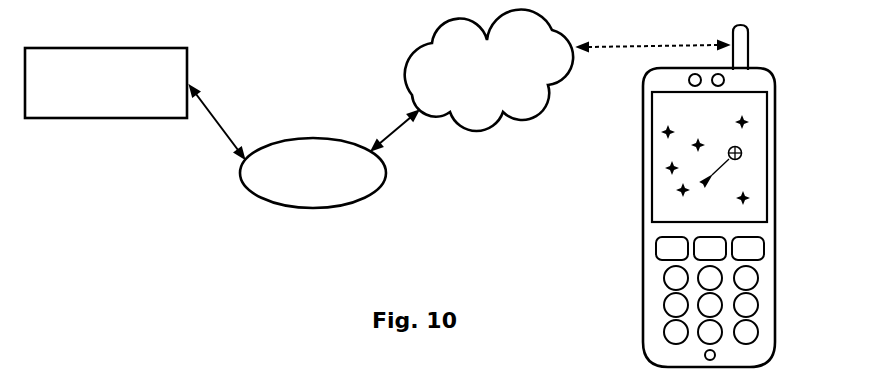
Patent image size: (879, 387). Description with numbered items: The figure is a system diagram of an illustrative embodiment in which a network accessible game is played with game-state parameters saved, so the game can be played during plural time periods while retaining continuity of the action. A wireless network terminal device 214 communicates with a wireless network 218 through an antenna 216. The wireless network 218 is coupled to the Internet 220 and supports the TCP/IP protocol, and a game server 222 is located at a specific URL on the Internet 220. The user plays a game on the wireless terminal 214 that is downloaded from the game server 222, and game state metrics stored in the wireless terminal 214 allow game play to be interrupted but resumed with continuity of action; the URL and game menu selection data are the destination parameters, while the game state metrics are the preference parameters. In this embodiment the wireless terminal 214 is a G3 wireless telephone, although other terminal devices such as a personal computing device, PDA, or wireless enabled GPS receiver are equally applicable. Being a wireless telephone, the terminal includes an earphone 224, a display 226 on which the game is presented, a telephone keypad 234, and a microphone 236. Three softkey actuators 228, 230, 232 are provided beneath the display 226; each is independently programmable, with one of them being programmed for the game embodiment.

The wireless network terminal device 214 is at (775, 202).
The antenna 216 is at (735, 25).
The wireless network 218 is at (502, 117).
The Internet 220 is at (297, 138).
The game server 222 is at (78, 119).
The earphone 224 is at (725, 81).
The display 226 is at (652, 158).
The softkey actuator 228 is at (656, 250).
The softkey actuator 230 is at (705, 236).
The softkey actuator 232 is at (764, 248).
The telephone keypad 234 is at (662, 268).
The microphone 236 is at (717, 355).